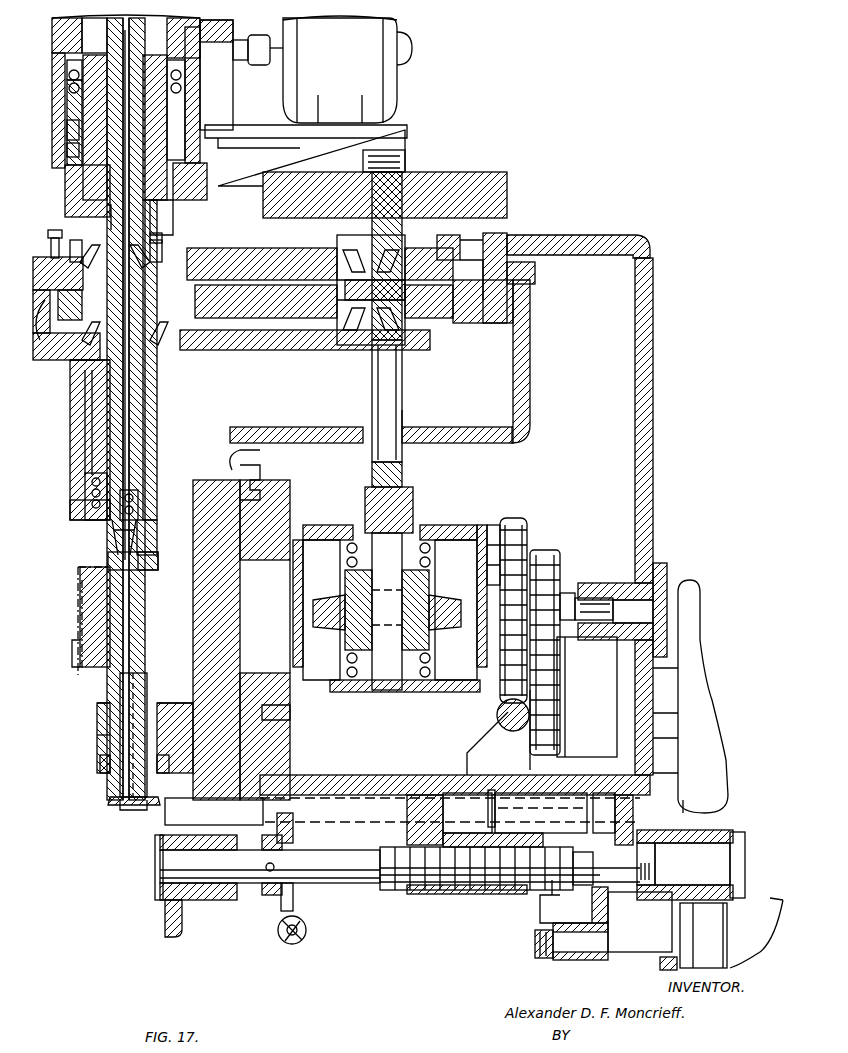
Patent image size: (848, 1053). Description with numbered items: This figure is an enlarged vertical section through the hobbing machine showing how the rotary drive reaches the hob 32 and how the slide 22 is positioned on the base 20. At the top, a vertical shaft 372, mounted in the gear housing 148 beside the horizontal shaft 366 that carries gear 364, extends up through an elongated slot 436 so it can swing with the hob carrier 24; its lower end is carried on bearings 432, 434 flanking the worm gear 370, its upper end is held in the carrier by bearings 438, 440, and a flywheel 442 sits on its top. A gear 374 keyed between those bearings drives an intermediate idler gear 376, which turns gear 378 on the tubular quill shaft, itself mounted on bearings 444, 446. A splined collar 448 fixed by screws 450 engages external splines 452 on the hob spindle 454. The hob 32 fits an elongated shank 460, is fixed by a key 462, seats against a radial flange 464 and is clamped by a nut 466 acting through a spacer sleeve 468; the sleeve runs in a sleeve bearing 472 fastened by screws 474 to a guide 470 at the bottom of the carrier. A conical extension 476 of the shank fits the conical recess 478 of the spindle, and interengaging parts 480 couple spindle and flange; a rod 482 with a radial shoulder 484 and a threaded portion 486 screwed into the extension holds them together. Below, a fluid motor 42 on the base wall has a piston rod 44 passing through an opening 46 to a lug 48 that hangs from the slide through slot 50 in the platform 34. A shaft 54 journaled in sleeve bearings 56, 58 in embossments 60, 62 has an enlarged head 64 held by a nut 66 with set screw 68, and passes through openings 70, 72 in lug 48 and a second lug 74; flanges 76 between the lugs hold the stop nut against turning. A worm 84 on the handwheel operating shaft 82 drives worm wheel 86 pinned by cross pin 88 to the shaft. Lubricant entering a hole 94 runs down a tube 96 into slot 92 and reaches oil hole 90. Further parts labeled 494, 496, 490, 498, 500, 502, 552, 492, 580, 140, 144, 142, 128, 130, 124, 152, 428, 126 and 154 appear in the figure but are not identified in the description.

The radial shoulder 484 is at (112, 42).
The bearing 494 is at (70, 76).
The bearing race 496 is at (70, 93).
The sleeve 490 is at (75, 110).
The spacer 498 is at (72, 125).
The retainer 500 is at (72, 148).
The bracket arm 502 is at (166, 117).
The motor 552 is at (385, 43).
The external splines 452 is at (108, 215).
The screw 492 is at (56, 236).
The flywheel 442 is at (70, 262).
The screws 450 is at (165, 226).
The splined collar 448 is at (160, 236).
The gear 378 is at (207, 300).
The bearing 444 is at (88, 360).
The hob spindle 454 is at (75, 381).
The hob carrier 24 is at (60, 414).
The rod 580 is at (100, 420).
The rod 482 is at (126, 440).
The bearing 446 is at (92, 490).
The externally threaded portion 486 is at (125, 500).
The conical extension 476 is at (125, 520).
The interengaging parts 480 is at (108, 555).
The conical recess 478 is at (140, 540).
The radial flange 464 is at (108, 560).
The hob 32 is at (92, 593).
The key 462 is at (95, 610).
The shank 460 is at (128, 657).
The sleeve bearing 472 is at (105, 700).
The spacer sleeve 468 is at (118, 714).
The guide 470 is at (103, 735).
The screws 474 is at (108, 760).
The nut 466 is at (112, 800).
The platform 34 is at (222, 805).
The bearing 438 is at (460, 242).
The housing top 140 is at (505, 240).
The cap 144 is at (515, 270).
The gear 374 is at (515, 298).
The inner housing 142 is at (523, 345).
The bearing 440 is at (415, 335).
The intermediate idler gear 376 is at (282, 346).
The boss 128 is at (230, 465).
The slide 22 is at (294, 432).
The bracket 130 is at (265, 470).
The housing wall 124 is at (262, 505).
The elongated slot 436 is at (405, 425).
The vertical shaft 372 is at (400, 478).
The base 20 is at (648, 478).
The bearing 434 is at (440, 540).
The gear housing 148 is at (480, 543).
The gear 152 is at (522, 536).
The gear 364 is at (548, 563).
The shaft 366 is at (592, 608).
The handle 428 is at (662, 580).
The worm gear 370 is at (442, 600).
The bearing 432 is at (352, 690).
The lug 126 is at (268, 713).
The plate 154 is at (528, 703).
The hole 94 is at (497, 776).
The tube 96 is at (525, 793).
The opening 72 is at (467, 813).
The elongated slot 92 is at (478, 848).
The embossment 60 is at (690, 830).
The sleeve bearing 56 is at (715, 835).
The enlarged head 64 is at (740, 865).
The fluid motor 42 is at (747, 915).
The opening 70 is at (622, 820).
The set screw 68 is at (630, 868).
The nut 66 is at (608, 905).
The piston rod 44 is at (640, 932).
The flanges 76 is at (550, 907).
The oil hole 90 is at (486, 868).
The second lug 74 is at (425, 895).
The shaft 54 is at (305, 858).
The elongated slot 50 is at (348, 836).
The sleeve bearing 58 is at (160, 888).
The embossment 62 is at (213, 903).
The cross pin 88 is at (268, 872).
The worm wheel 86 is at (300, 902).
The operating shaft 82 is at (305, 930).
The worm 84 is at (302, 942).
The lug 48 is at (560, 957).
The opening 46 is at (672, 963).